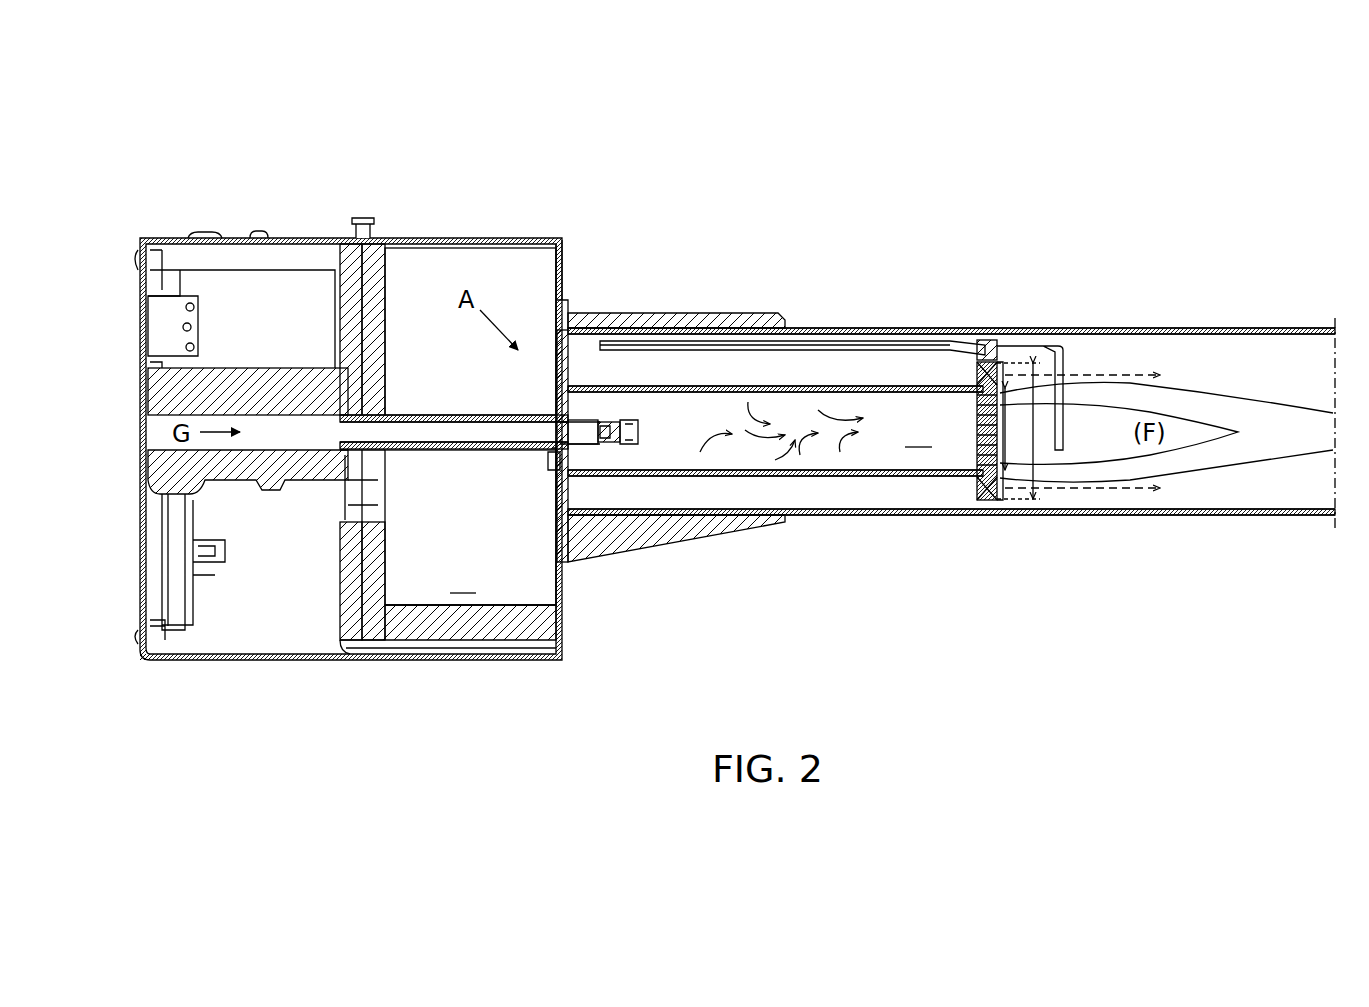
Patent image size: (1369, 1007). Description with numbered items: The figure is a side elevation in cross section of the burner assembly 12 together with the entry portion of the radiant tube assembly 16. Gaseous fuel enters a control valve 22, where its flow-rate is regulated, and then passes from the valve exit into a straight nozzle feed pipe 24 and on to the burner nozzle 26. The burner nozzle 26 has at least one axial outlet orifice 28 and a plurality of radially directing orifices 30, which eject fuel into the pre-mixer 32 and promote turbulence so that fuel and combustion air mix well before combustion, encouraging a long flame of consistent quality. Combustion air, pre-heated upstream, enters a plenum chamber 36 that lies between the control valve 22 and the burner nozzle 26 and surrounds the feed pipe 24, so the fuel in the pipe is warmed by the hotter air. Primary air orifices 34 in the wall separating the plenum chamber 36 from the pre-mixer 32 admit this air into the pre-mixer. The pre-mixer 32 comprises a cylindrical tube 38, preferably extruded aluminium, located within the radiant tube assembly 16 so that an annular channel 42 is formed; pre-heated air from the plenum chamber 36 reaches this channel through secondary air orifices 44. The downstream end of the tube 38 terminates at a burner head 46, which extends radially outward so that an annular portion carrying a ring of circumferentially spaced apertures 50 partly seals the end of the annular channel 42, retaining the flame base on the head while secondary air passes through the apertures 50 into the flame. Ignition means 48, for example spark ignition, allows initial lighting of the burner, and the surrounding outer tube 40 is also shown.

The burner assembly 12 is at (934, 200).
The radiant tube assembly 16 is at (1074, 520).
The control valve 22 is at (252, 380).
The nozzle feed pipe 24 is at (464, 416).
The burner nozzle 26 is at (625, 420).
The axial outlet orifice 28 is at (638, 430).
The radially directing orifices 30 is at (610, 440).
The pre-mixer 32 is at (775, 431).
The primary air orifices 34 is at (555, 460).
The plenum chamber 36 is at (448, 449).
The cylindrical tube 38 is at (840, 386).
The outer tube 40 is at (1245, 328).
The annular channel 42 is at (760, 498).
The secondary air orifices 44 is at (567, 375).
The burner head 46 is at (975, 480).
The ignition means 48 is at (1063, 362).
The apertures 50 is at (1000, 365).